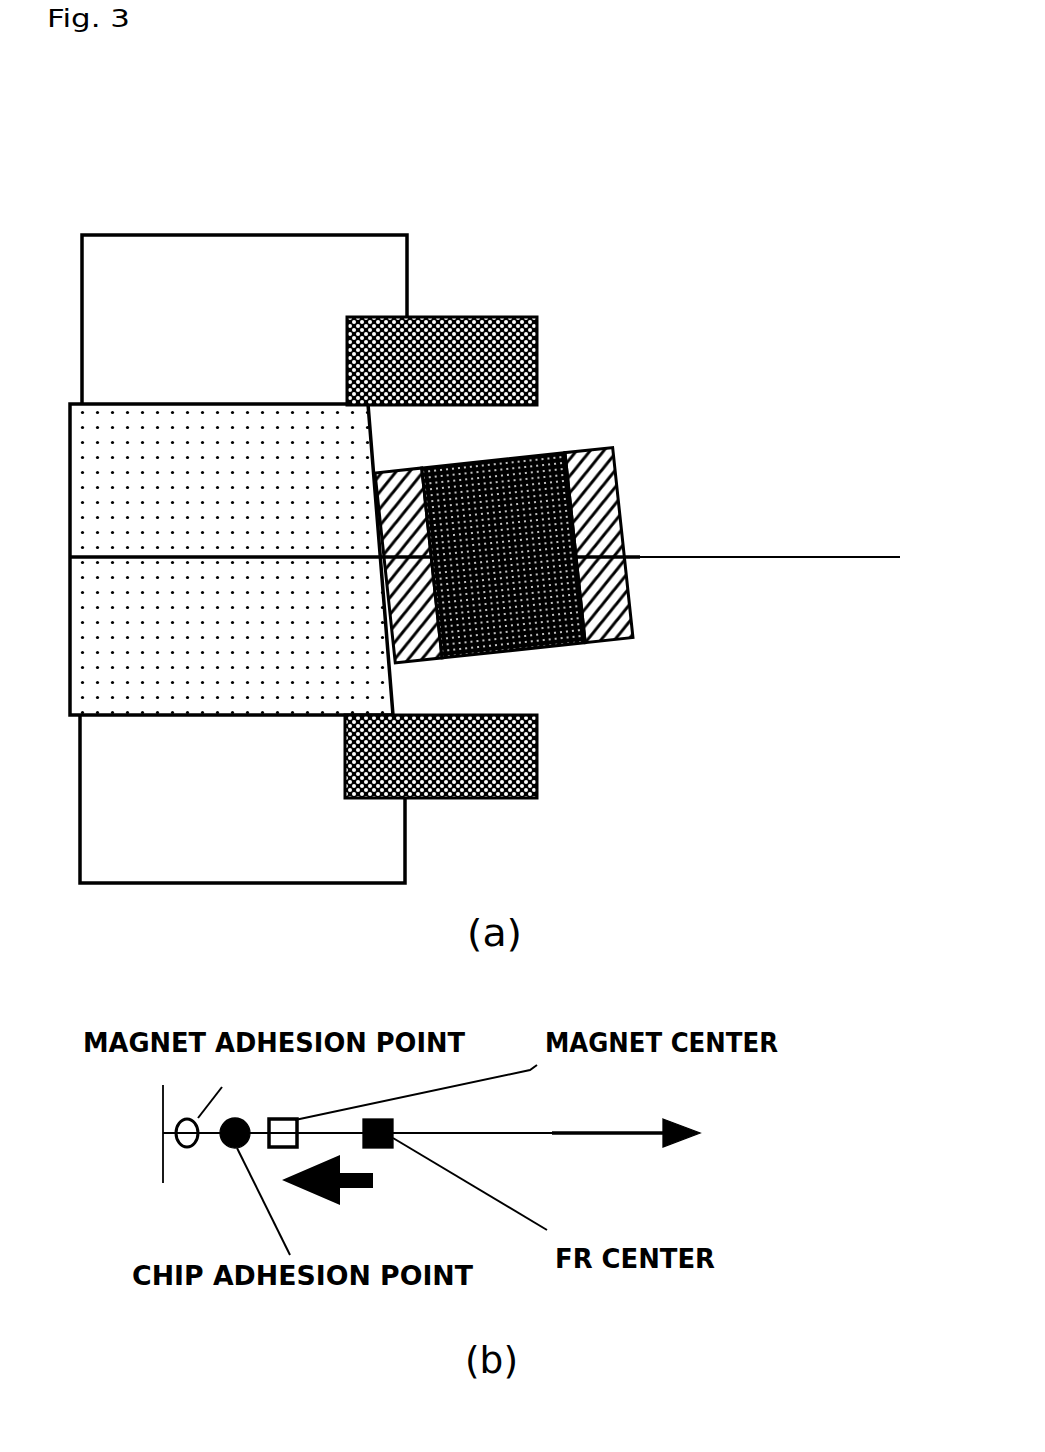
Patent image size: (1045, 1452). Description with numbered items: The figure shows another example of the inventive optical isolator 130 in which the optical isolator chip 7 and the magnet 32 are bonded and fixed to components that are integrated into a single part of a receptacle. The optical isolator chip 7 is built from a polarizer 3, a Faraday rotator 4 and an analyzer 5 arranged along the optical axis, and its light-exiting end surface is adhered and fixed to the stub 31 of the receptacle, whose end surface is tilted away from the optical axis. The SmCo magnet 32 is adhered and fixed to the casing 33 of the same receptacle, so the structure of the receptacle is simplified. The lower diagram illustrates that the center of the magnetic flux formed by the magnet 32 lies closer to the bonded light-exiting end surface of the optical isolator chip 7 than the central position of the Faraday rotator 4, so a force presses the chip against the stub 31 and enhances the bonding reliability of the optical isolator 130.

The polarizer 3 is at (394, 470).
The Faraday rotator 4 is at (497, 456).
The analyzer 5 is at (585, 440).
The optical isolator chip 7 is at (684, 641).
The stub 31 is at (205, 400).
The magnet 32 is at (538, 770).
The casing 33 is at (270, 236).
The optical isolator 130 is at (499, 357).